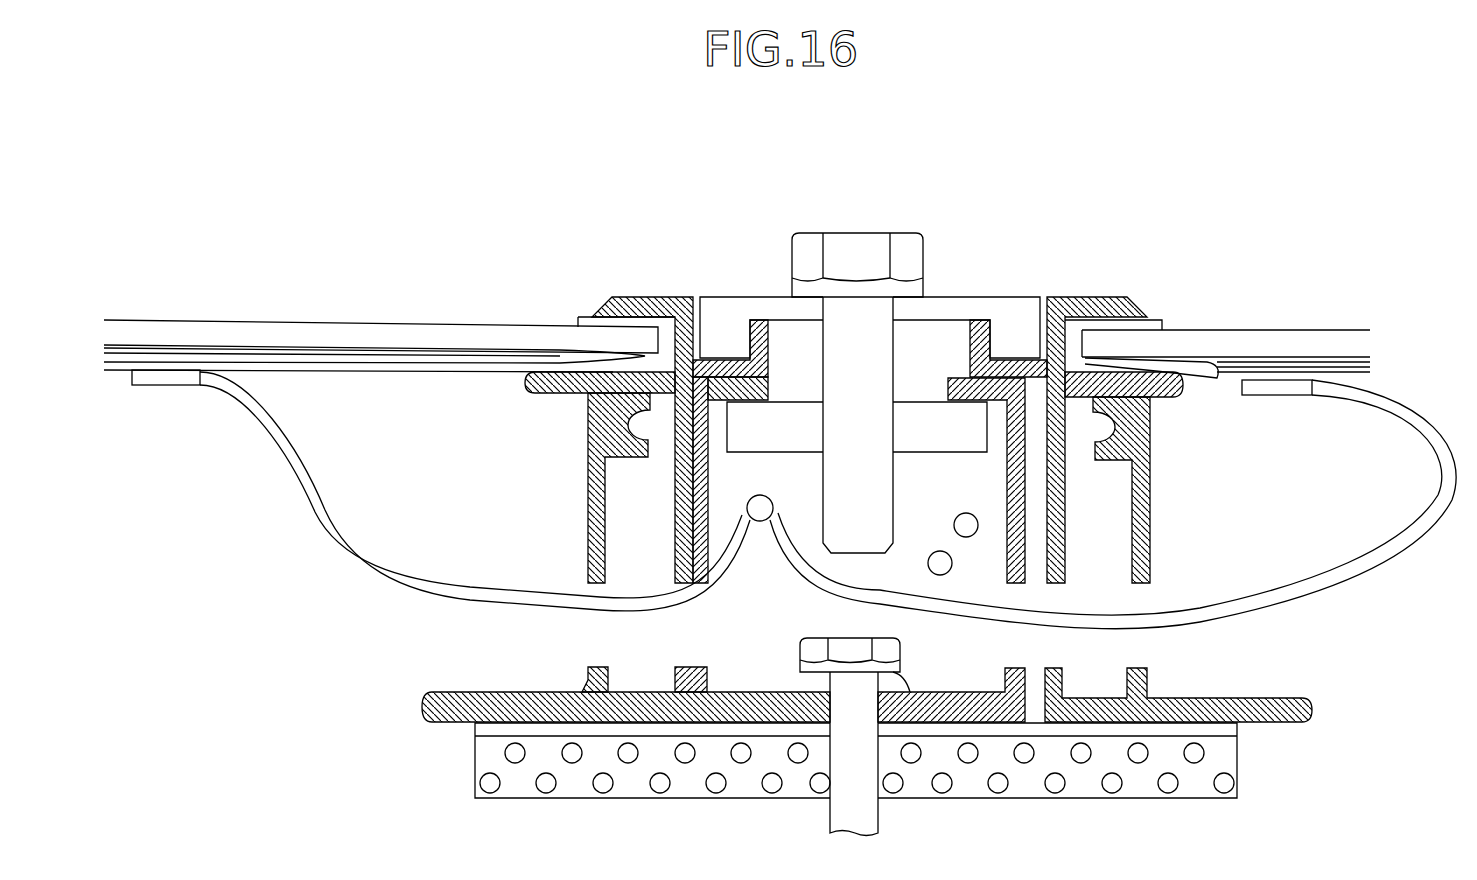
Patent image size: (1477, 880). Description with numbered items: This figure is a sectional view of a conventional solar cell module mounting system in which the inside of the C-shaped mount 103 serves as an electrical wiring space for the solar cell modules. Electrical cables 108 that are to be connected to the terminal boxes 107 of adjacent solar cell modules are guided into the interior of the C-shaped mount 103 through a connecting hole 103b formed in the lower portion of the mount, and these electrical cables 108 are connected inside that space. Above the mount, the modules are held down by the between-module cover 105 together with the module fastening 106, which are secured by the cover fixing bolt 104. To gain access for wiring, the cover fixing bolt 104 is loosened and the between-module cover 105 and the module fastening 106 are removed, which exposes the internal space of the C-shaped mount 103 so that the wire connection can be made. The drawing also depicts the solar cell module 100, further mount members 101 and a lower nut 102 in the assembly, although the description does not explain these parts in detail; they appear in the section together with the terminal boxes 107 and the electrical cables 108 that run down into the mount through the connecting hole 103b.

The display panel 100 is at (1312, 340).
The clip 101 is at (590, 470).
The nut 102 is at (905, 652).
The C-shaped mount 103 is at (1007, 485).
The connecting hole 103b is at (697, 642).
The cover fixing bolt 104 is at (858, 255).
The between-module cover 105 is at (1015, 312).
The module fastening 106 is at (928, 417).
The terminal box 107 is at (165, 385).
The electrical cable 108 is at (375, 575).